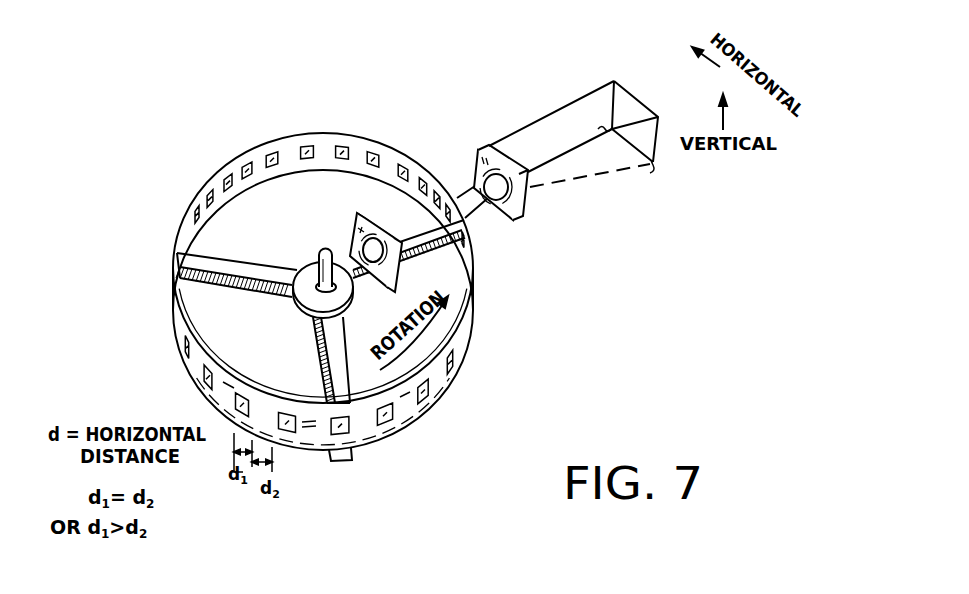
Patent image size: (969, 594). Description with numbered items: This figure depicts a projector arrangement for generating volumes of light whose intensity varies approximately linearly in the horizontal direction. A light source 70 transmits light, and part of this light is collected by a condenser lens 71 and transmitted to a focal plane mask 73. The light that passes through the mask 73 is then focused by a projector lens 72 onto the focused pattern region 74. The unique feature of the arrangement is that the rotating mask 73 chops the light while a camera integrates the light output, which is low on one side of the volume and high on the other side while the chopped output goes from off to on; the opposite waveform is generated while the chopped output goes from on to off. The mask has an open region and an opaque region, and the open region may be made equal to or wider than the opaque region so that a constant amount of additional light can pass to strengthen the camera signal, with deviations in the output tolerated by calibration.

The light source 70 is at (323, 252).
The condenser lens 71 is at (388, 286).
The projector lens 72 is at (508, 222).
The focal plane mask 73 is at (414, 414).
The focused pattern region 74 is at (615, 80).